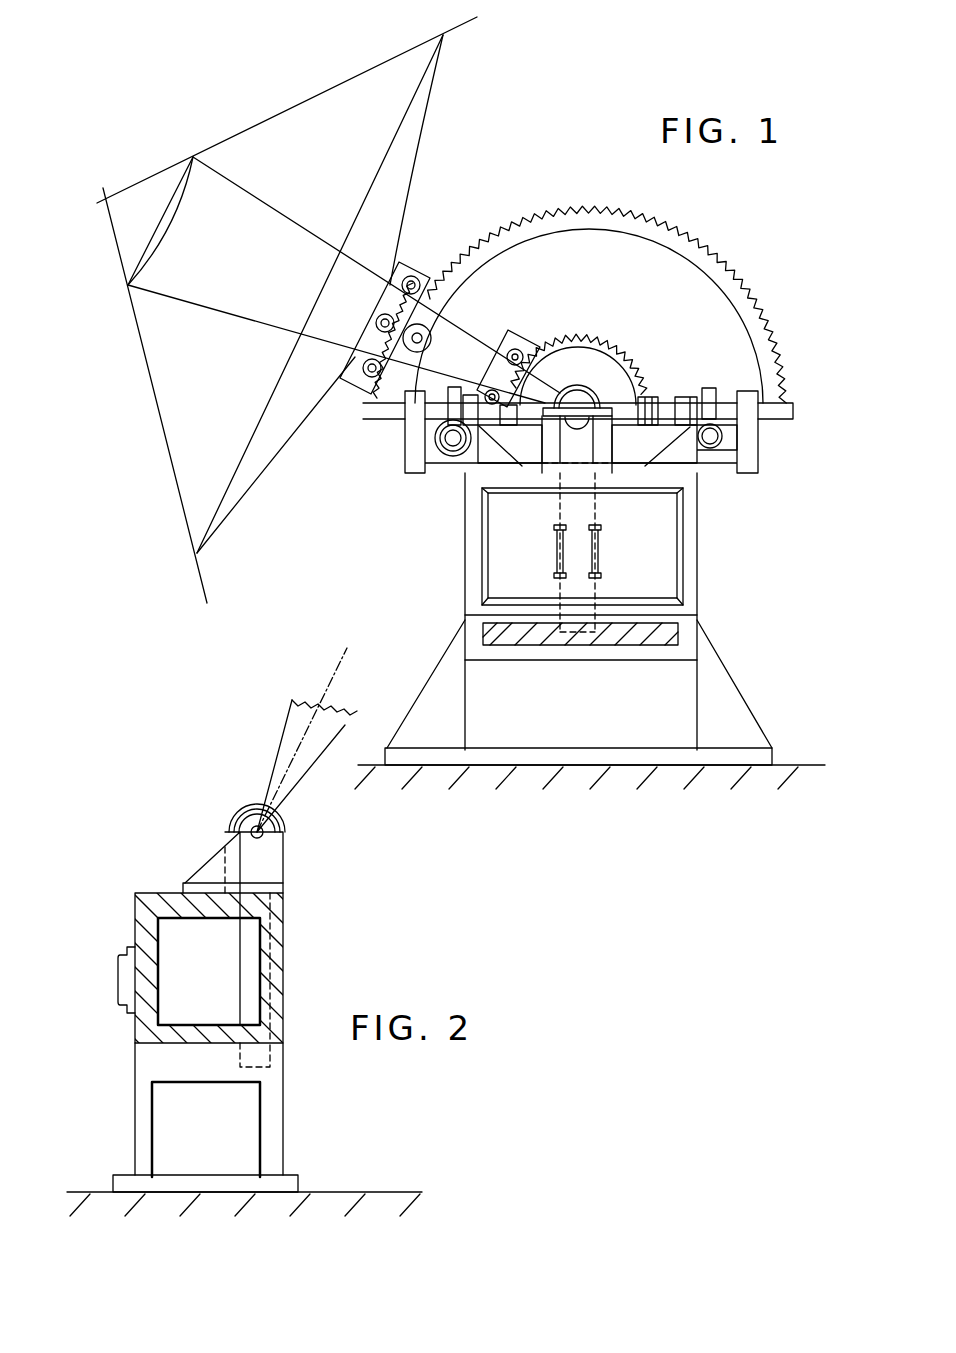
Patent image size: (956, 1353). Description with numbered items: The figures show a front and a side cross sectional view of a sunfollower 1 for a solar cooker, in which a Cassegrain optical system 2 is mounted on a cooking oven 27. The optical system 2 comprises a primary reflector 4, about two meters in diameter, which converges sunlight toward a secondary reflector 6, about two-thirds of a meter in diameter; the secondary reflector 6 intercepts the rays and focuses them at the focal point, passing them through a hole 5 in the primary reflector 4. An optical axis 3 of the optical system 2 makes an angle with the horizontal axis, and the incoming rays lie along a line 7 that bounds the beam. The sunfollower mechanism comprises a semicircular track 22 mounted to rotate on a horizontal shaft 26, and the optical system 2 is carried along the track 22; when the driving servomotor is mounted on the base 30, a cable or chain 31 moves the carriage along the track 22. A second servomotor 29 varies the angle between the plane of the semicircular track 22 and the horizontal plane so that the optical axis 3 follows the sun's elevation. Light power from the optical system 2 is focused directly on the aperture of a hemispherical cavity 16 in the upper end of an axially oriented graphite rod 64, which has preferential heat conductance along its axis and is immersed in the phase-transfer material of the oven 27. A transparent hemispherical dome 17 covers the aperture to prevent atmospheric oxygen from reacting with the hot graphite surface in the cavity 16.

In FIG. 1, the sunfollower 1 is at (460, 363).
In FIG. 2, the sunfollower 1 is at (280, 740).
In FIG. 1, the Cassegrain optical system 2 is at (312, 116).
In FIG. 2, the Cassegrain optical system 2 is at (322, 700).
In FIG. 1, the optical axis 3 is at (250, 254).
In FIG. 1, the primary reflector 4 is at (424, 118).
In FIG. 1, the hole 5 is at (372, 305).
In FIG. 1, the secondary reflector 6 is at (180, 210).
In FIG. 1, the aperture plane line 7 is at (294, 107).
In FIG. 1, the hemispherical cavity 16 is at (573, 428).
In FIG. 1, the transparent hemispherical dome 17 is at (586, 391).
In FIG. 2, the transparent hemispherical dome 17 is at (280, 822).
In FIG. 1, the semicircular track 22 is at (602, 343).
In FIG. 1, the horizontal shaft 26 is at (788, 408).
In FIG. 2, the horizontal shaft 26 is at (252, 822).
In FIG. 1, the cooking oven 27 is at (698, 556).
In FIG. 2, the cooking oven 27 is at (244, 1129).
In FIG. 1, the second servomotor 29 is at (378, 366).
In FIG. 1, the base 30 is at (733, 467).
In FIG. 2, the base 30 is at (280, 890).
In FIG. 1, the cable or chain 31 is at (430, 307).
In FIG. 1, the axially oriented graphite rod 64 is at (580, 452).
In FIG. 2, the axially oriented graphite rod 64 is at (263, 858).